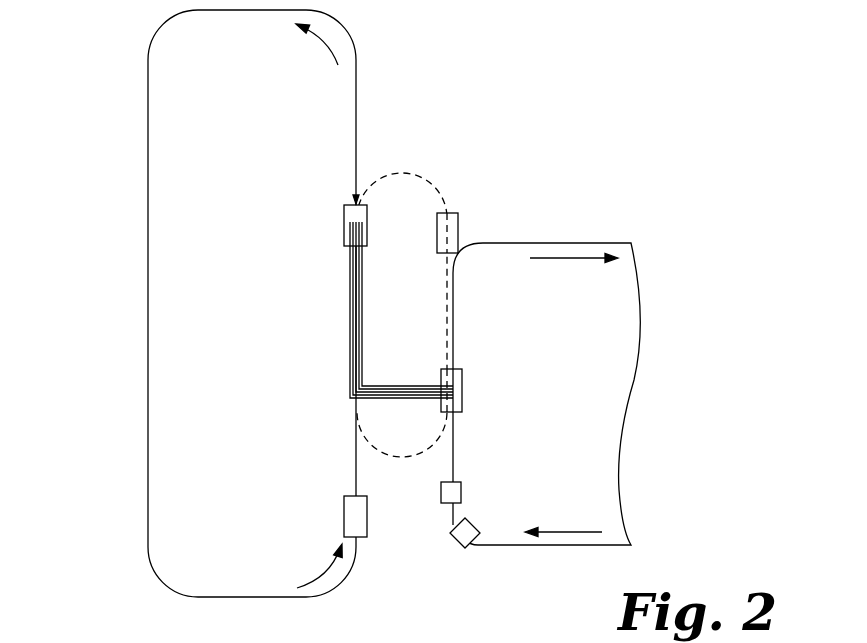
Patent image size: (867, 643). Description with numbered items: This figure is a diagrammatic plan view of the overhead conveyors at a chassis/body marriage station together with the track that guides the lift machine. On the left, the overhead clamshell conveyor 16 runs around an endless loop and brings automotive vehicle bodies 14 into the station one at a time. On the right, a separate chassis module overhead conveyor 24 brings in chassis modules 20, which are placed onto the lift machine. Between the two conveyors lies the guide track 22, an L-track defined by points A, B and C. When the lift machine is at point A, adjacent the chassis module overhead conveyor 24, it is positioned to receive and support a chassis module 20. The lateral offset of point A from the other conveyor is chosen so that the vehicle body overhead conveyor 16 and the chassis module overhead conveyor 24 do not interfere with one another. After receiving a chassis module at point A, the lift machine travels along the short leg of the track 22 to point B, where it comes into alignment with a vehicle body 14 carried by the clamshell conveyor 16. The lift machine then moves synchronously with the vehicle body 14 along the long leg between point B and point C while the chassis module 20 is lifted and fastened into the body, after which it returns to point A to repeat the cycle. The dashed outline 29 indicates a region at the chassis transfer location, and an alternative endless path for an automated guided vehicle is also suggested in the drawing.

The overhead clamshell conveyor 16 is at (147, 88).
The vehicle body 14 is at (344, 213).
The guide track 22 is at (350, 325).
The dashed transfer region 29 is at (413, 172).
The chassis module overhead conveyor 24 is at (525, 242).
The chassis module 20 is at (448, 488).
The point A is at (455, 395).
The point B is at (350, 399).
The point C is at (344, 228).